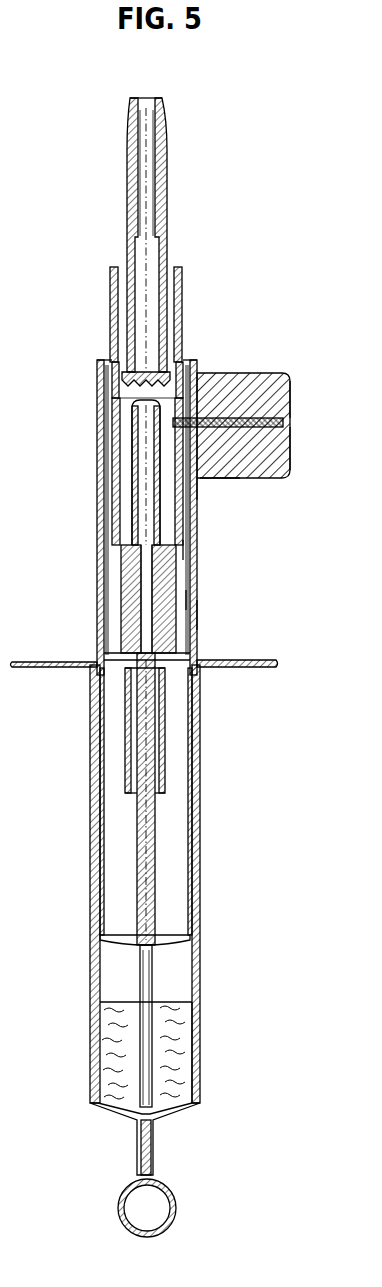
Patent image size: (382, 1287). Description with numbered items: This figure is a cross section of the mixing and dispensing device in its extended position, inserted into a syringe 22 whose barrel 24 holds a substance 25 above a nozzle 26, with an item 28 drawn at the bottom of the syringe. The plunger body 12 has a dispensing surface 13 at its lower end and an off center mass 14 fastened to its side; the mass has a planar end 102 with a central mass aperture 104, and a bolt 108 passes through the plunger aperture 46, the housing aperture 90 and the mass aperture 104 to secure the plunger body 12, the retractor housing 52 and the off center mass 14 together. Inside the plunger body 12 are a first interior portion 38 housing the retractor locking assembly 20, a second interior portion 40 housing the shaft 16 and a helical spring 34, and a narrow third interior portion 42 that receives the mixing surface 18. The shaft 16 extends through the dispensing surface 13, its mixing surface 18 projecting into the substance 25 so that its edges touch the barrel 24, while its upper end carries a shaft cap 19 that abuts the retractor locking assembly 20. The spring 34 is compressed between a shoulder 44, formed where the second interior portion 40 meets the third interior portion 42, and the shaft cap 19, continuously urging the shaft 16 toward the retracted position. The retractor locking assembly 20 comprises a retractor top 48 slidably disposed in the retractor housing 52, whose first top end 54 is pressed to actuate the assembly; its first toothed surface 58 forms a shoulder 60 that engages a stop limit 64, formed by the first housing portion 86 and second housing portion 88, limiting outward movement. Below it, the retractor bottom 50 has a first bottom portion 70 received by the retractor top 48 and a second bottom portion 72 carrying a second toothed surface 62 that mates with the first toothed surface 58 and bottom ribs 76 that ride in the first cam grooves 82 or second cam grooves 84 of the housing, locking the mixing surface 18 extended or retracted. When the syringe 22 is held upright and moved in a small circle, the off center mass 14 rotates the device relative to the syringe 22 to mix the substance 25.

The plunger body 12 is at (197, 898).
The dispensing surface 13 is at (180, 943).
The off center mass 14 is at (250, 373).
The shaft 16 is at (158, 807).
The mixing surface 18 is at (190, 1063).
The shaft cap 19 is at (110, 680).
The retractor locking assembly 20 is at (195, 256).
The syringe 22 is at (84, 1174).
The barrel 24 is at (200, 1074).
The substance 25 is at (100, 1020).
The nozzle 26 is at (154, 1137).
The ring 28 is at (177, 1211).
The helical spring 34 is at (158, 694).
The first interior portion 38 is at (100, 577).
The second interior portion 40 is at (130, 728).
The third interior portion 42 is at (100, 870).
The shoulder 44 is at (130, 803).
The plunger aperture 46 is at (222, 478).
The retractor top 48 is at (167, 139).
The retractor bottom 50 is at (120, 565).
The retractor housing 52 is at (107, 432).
The first top end 54 is at (138, 98).
The first toothed surface 58 is at (125, 396).
The shoulder 60 is at (112, 378).
The second toothed surface 62 is at (118, 527).
The stop limit 64 is at (110, 360).
The first bottom portion 70 is at (157, 512).
The second bottom portion 72 is at (190, 612).
The bottom rib 76 is at (190, 568).
The first cam groove 82 is at (115, 480).
The second cam groove 84 is at (190, 541).
The first housing portion 86 is at (181, 305).
The second housing portion 88 is at (190, 597).
The housing aperture 90 is at (198, 480).
The planar end 102 is at (288, 385).
The mass aperture 104 is at (283, 424).
The bolt 108 is at (270, 478).